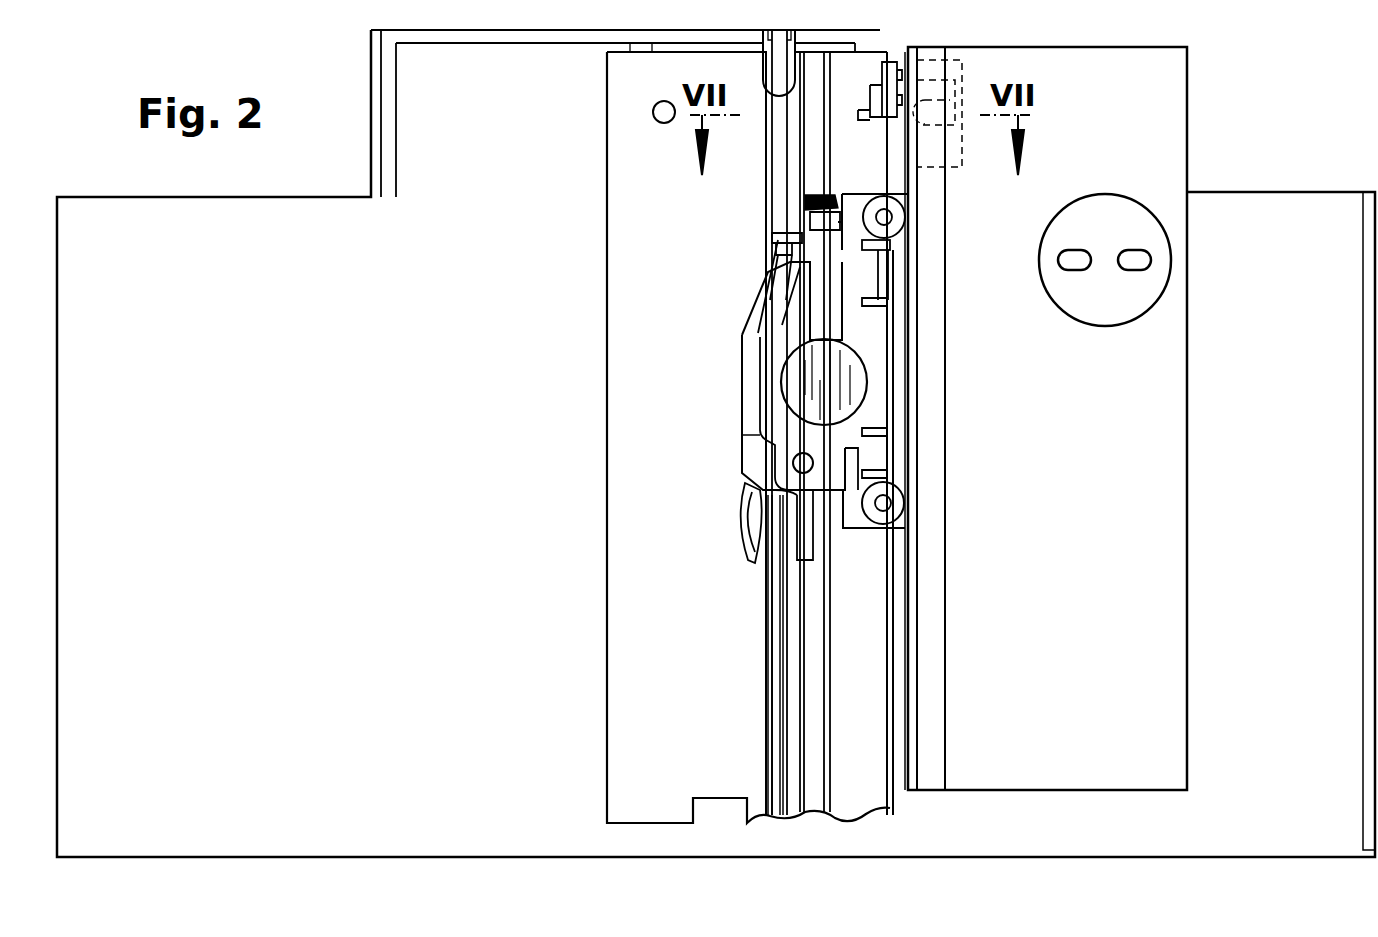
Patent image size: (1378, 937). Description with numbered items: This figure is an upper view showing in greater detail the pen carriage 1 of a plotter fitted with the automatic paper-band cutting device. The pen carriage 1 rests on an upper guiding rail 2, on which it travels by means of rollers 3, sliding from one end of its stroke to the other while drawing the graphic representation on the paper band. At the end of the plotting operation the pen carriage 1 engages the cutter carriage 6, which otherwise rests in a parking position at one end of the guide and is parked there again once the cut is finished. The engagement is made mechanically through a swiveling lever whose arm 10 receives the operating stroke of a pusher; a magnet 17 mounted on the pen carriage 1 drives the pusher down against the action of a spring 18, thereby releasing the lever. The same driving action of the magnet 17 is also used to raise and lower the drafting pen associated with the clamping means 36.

The pen carriage 1 is at (740, 387).
The upper guiding rail 2 is at (910, 578).
The roller 3 is at (893, 503).
The cutter carriage 6 is at (858, 88).
The arm 10 is at (780, 240).
The magnet 17 is at (777, 367).
The spring 18 is at (822, 205).
The clamping means 36 is at (748, 530).